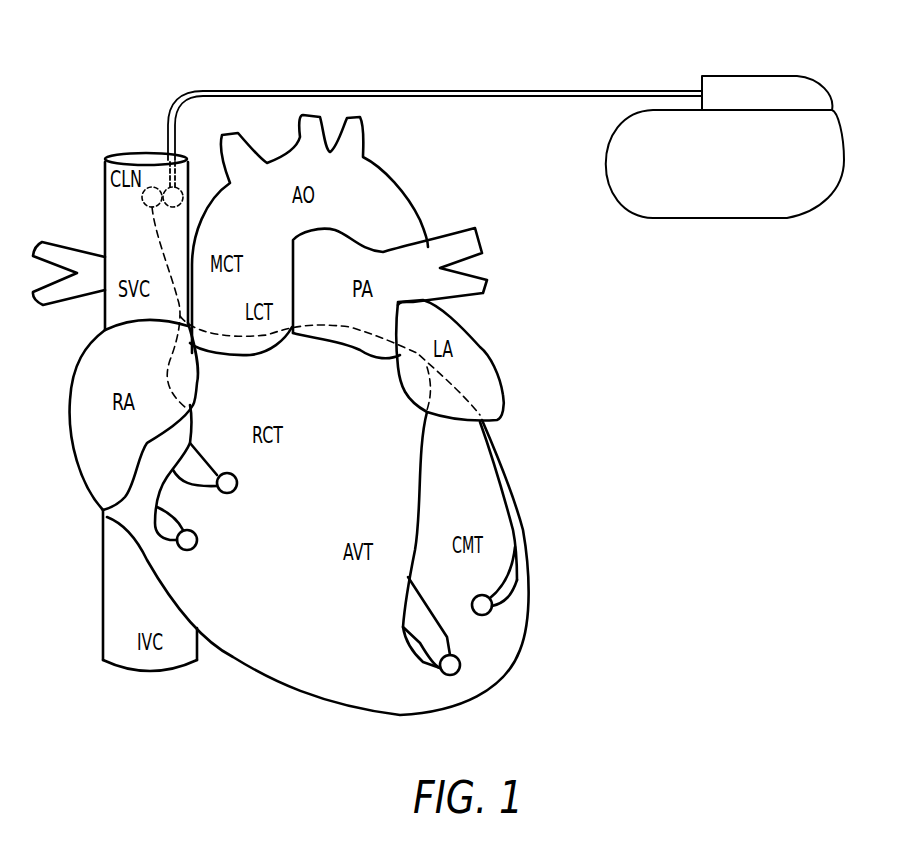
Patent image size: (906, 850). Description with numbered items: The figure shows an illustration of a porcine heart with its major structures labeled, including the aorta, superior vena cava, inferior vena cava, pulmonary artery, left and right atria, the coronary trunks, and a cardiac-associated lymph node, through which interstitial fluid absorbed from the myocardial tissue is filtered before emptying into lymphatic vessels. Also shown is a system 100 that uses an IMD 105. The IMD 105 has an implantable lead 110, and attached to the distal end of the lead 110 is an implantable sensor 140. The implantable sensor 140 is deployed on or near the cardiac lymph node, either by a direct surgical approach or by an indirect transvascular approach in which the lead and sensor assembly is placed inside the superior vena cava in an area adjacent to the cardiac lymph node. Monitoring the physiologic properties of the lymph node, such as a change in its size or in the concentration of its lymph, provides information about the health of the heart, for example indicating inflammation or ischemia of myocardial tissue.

The system 100 is at (521, 115).
The IMD 105 is at (844, 153).
The implantable lead 110 is at (422, 133).
The implantable sensor 140 is at (180, 191).